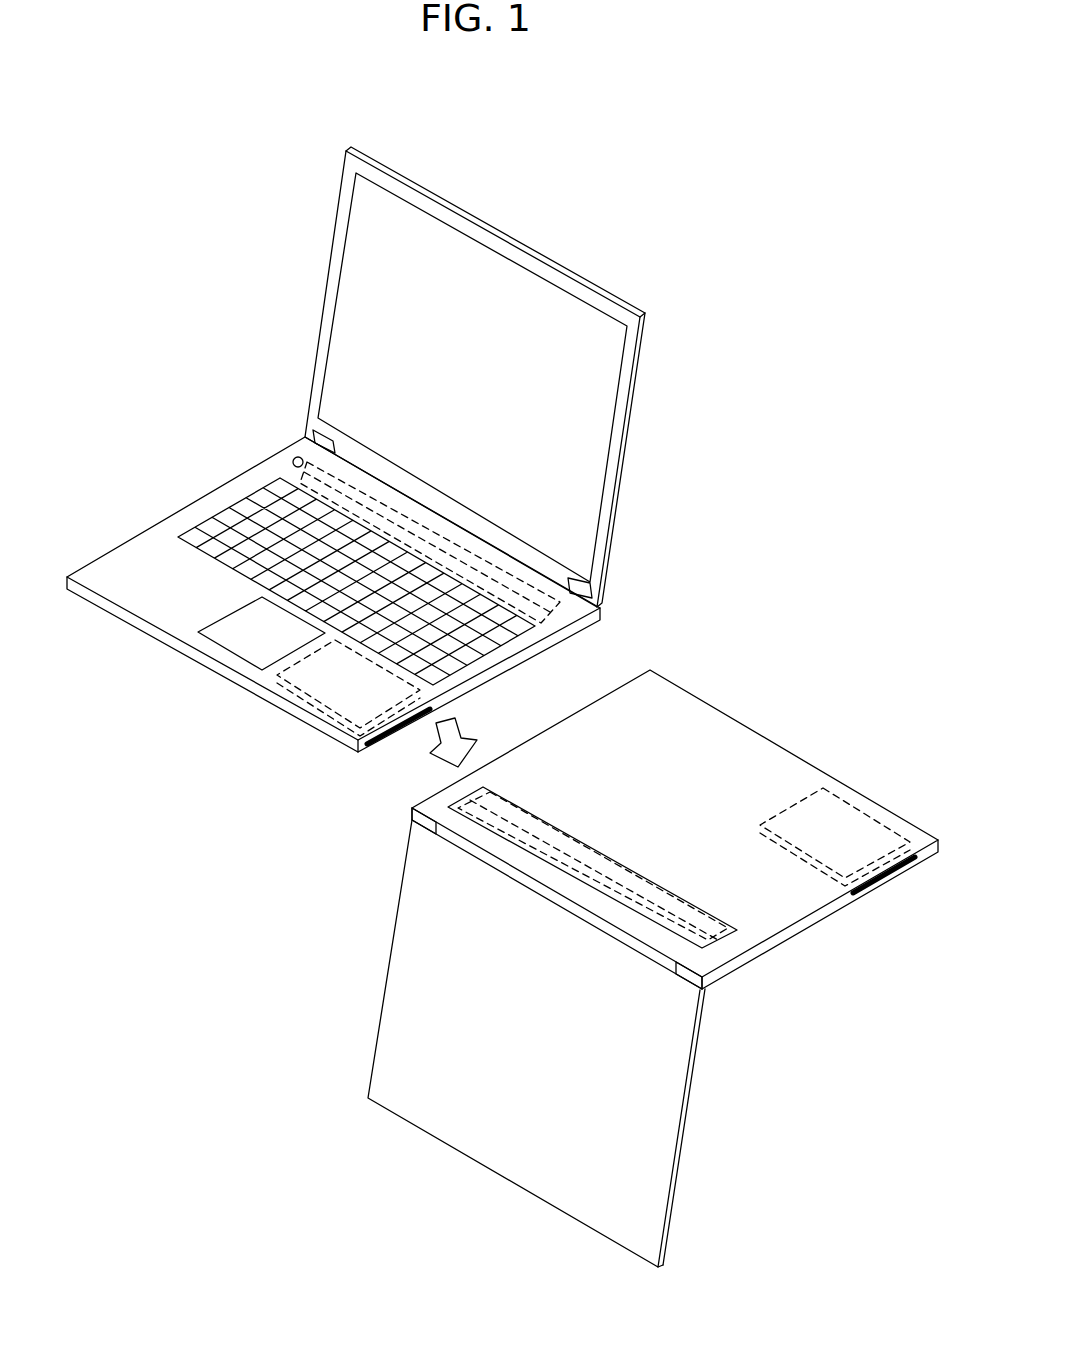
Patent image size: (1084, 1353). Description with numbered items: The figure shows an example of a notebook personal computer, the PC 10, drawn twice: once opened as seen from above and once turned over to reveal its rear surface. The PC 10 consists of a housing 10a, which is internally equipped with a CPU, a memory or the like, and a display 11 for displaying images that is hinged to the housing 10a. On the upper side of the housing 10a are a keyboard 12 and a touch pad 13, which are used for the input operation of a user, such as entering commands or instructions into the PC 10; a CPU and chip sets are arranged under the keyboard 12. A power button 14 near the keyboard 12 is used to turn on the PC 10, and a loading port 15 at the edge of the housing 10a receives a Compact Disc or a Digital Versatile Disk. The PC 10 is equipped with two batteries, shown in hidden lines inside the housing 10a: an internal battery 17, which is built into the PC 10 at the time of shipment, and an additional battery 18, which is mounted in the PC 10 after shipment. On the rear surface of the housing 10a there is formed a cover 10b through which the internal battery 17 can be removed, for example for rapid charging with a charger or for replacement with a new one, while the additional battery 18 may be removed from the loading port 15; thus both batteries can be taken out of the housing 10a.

The PC 10 is at (636, 229).
The housing 10a is at (140, 536).
The cover 10b is at (735, 926).
The display 11 is at (592, 480).
The keyboard 12 is at (507, 635).
The touch pad 13 is at (243, 645).
The power button 14 is at (297, 456).
The loading port 15 is at (403, 732).
The internal battery 17 is at (575, 612).
The additional battery 18 is at (335, 696).